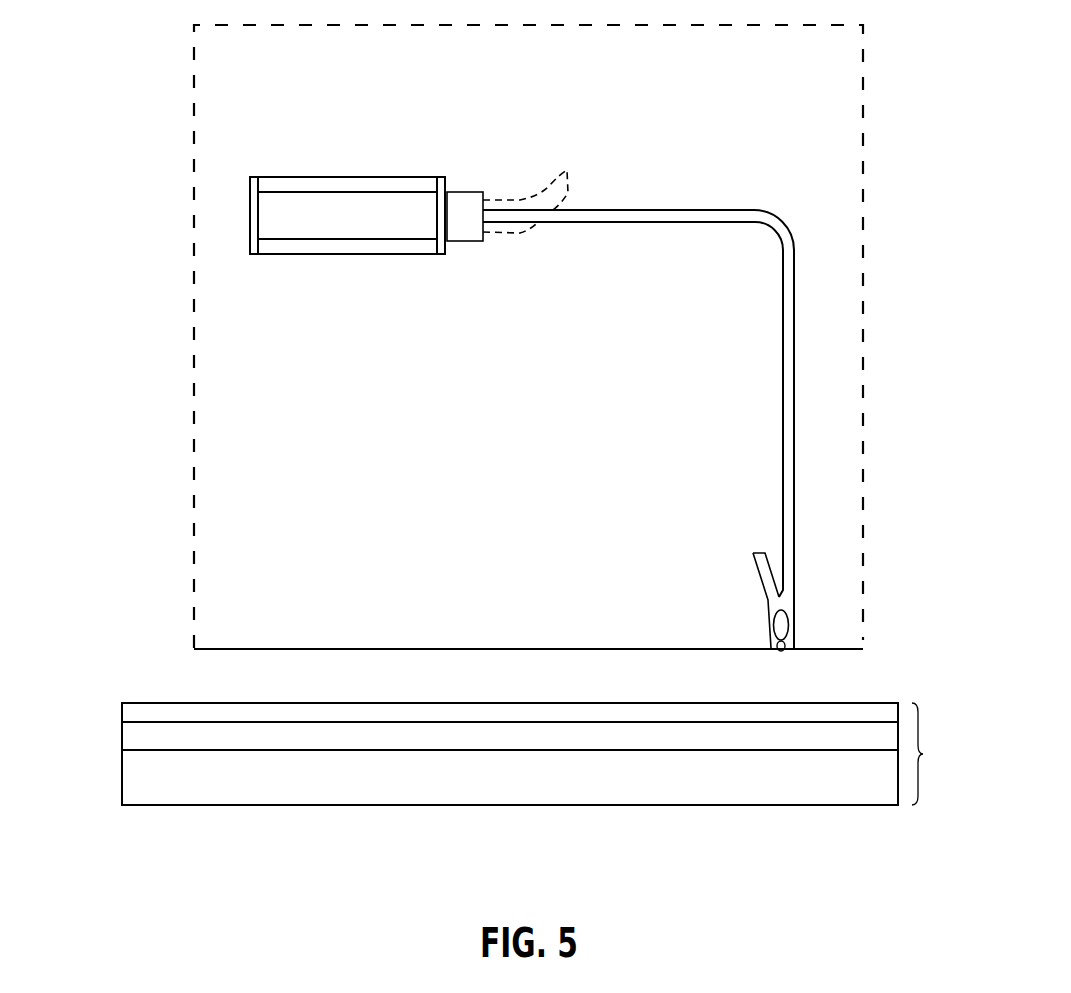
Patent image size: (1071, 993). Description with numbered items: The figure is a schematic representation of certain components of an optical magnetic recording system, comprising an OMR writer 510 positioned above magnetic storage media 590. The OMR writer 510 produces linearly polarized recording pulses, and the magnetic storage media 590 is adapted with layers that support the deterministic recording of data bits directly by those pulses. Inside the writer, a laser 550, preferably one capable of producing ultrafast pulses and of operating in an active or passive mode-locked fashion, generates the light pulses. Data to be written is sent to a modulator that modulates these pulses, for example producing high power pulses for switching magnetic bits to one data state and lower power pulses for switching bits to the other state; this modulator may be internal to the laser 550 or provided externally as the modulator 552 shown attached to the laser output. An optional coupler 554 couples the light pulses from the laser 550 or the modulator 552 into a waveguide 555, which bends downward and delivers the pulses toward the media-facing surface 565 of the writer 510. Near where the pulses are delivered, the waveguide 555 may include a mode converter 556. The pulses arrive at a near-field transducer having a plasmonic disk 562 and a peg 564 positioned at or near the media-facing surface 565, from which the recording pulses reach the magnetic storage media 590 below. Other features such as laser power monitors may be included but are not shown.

The OMR writer 510 is at (147, 283).
The laser 550 is at (362, 153).
The modulator 552 is at (463, 228).
The coupler 554 is at (543, 198).
The waveguide 555 is at (782, 367).
The mode converter 556 is at (758, 568).
The plasmonic disk 562 is at (770, 627).
The peg 564 is at (785, 650).
The media-facing surface 565 is at (528, 650).
The magnetic storage media 590 is at (546, 754).